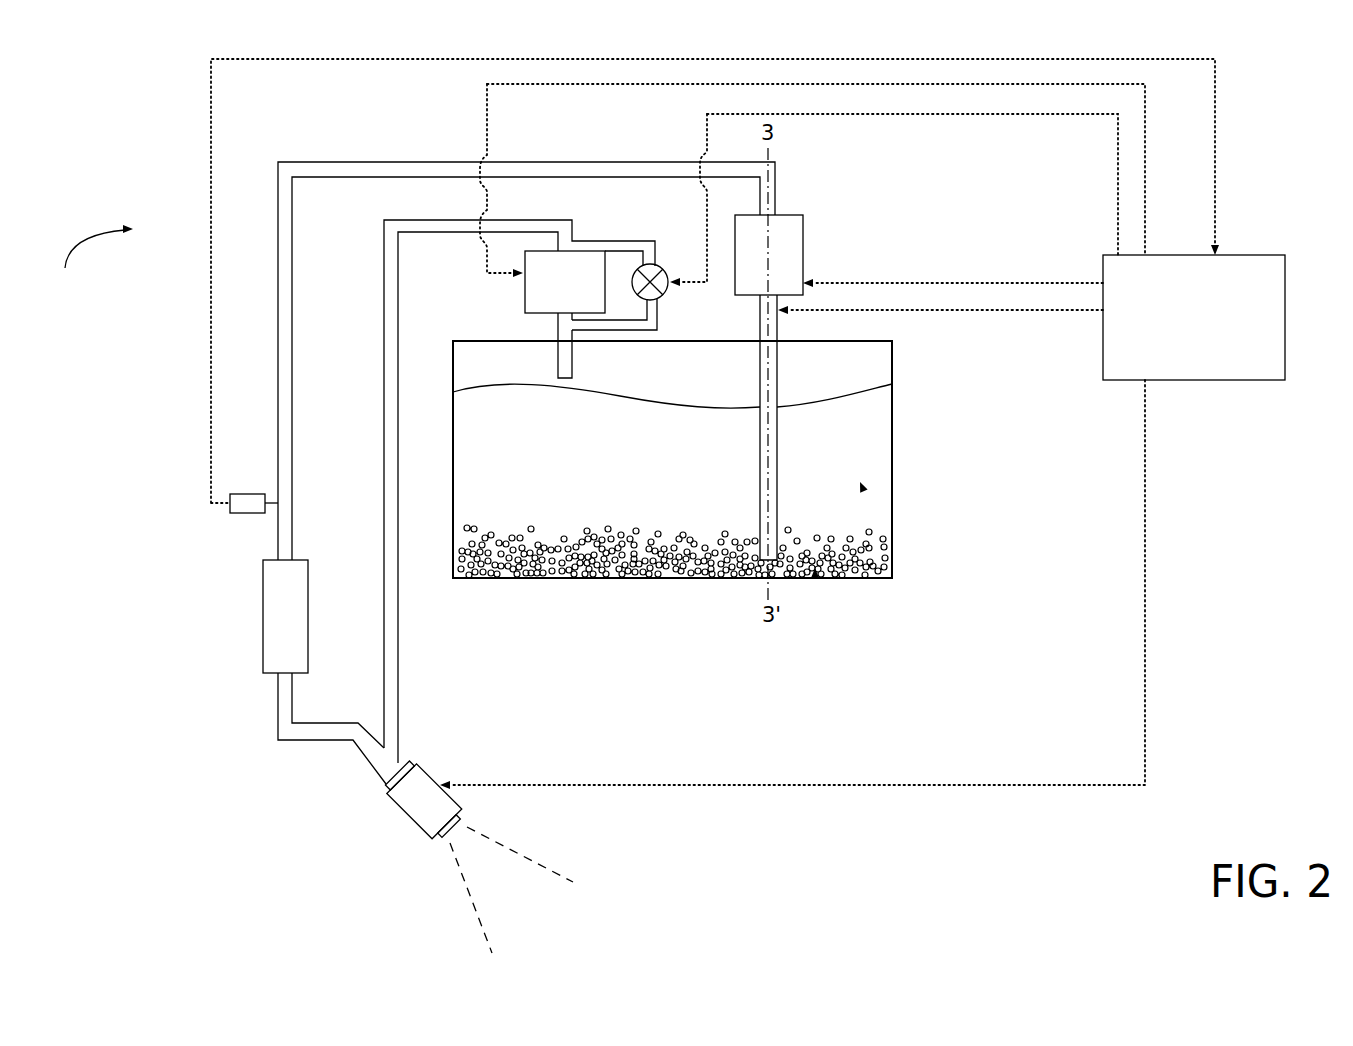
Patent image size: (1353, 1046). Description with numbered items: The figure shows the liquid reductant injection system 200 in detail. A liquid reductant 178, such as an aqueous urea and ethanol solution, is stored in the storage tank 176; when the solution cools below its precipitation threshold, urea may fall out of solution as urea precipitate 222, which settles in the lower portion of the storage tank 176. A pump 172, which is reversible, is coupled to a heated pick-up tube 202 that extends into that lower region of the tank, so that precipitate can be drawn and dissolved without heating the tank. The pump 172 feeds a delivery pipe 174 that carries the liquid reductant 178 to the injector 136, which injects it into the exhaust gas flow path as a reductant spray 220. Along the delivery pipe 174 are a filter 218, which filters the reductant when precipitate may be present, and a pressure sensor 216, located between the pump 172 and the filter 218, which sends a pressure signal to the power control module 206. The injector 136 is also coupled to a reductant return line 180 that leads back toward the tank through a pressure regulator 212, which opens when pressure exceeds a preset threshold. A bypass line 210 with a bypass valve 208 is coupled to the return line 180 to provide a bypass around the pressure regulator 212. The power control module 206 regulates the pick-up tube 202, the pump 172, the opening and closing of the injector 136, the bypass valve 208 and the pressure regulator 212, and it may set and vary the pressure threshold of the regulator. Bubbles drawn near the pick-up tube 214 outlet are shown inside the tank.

The liquid reductant injection system 200 is at (90, 262).
The injector 136 is at (432, 810).
The pump 172 is at (805, 257).
The delivery pipe 174 is at (285, 423).
The storage tank 176 is at (893, 405).
The liquid reductant 178 is at (862, 490).
The reductant return line 180 is at (393, 678).
The pick-up tube 202 is at (778, 423).
The power control module 206 is at (1288, 317).
The bypass valve 208 is at (661, 265).
The bypass line 210 is at (657, 330).
The pressure regulator 212 is at (605, 260).
The return outlet 214 is at (571, 362).
The pressure sensor 216 is at (243, 514).
The filter 218 is at (309, 632).
The reductant spray 220 is at (488, 870).
The urea precipitate 222 is at (817, 578).